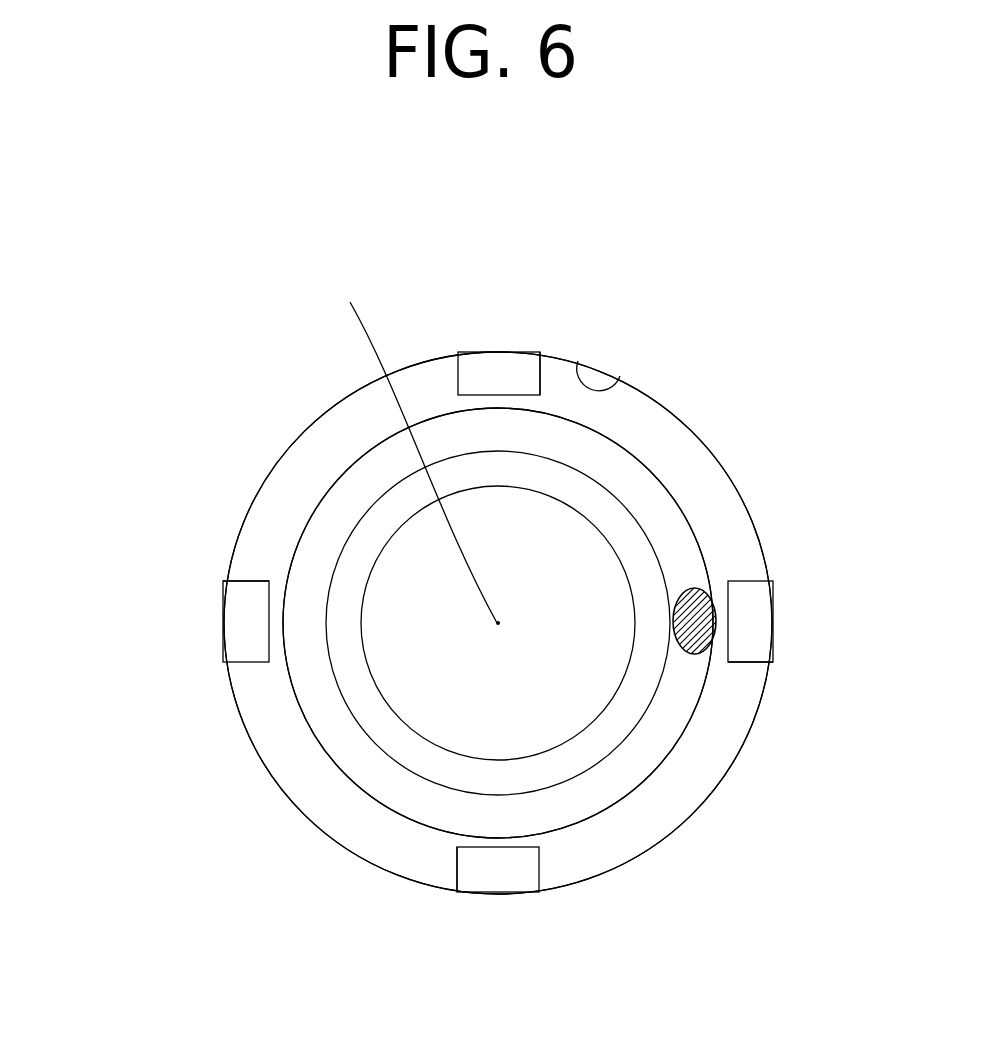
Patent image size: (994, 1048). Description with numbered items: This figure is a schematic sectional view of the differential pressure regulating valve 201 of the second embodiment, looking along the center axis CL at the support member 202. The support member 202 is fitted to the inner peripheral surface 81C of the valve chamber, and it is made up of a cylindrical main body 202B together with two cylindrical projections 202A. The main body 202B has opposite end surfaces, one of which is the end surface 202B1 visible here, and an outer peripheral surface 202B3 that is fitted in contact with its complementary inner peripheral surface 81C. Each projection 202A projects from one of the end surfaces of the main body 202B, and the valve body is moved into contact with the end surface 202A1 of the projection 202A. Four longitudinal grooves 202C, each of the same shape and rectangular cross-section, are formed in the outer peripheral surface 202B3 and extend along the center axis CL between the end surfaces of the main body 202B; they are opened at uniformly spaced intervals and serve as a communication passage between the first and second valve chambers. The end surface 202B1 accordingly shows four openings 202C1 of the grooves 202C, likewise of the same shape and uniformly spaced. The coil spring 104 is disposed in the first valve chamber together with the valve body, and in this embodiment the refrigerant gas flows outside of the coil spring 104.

The differential pressure regulating valve 201 is at (330, 240).
The support member 202 is at (337, 398).
The cylindrical projection 202A is at (385, 752).
The end surface of the projection 202A1 is at (587, 557).
The cylindrical main body 202B is at (243, 727).
The end surface 202B1 is at (647, 427).
The outer peripheral surface 202B3 is at (727, 778).
The longitudinal groove 202C is at (498, 393).
The opening 202C1 is at (540, 376).
The coil spring 104 is at (323, 490).
The inner peripheral surface 81C is at (618, 378).
The center axis CL is at (415, 448).